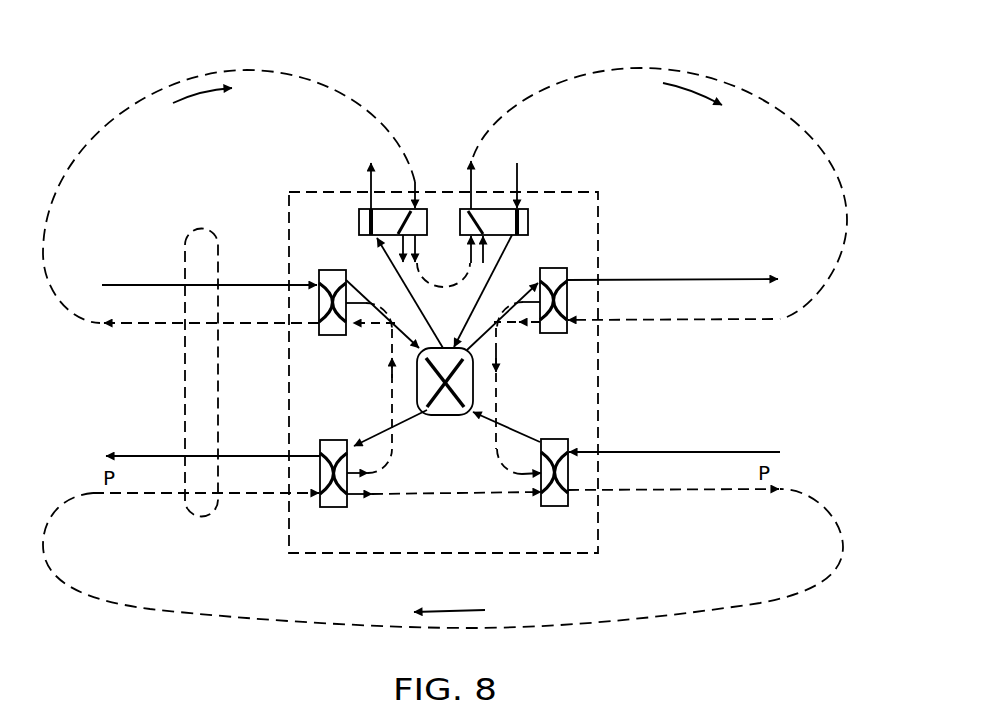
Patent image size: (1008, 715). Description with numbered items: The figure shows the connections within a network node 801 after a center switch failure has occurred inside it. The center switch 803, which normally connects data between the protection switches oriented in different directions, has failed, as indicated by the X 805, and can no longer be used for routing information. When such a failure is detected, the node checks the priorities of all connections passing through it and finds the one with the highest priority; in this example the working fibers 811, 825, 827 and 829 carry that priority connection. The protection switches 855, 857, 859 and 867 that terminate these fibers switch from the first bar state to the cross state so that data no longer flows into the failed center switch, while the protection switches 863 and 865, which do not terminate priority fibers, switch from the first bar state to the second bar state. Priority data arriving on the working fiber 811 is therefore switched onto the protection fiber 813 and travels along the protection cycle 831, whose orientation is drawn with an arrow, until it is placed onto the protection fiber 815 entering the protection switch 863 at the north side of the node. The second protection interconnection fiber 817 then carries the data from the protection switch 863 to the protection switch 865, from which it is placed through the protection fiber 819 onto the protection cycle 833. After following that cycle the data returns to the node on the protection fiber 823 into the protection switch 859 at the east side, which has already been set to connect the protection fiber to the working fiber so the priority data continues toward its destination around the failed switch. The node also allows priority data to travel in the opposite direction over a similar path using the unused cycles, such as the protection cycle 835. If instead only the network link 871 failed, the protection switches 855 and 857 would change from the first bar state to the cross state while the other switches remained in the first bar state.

The network node 801 is at (598, 542).
The center switch 803 is at (443, 417).
The X 805 is at (453, 373).
The working fiber 811 is at (282, 285).
The protection fiber 813 is at (162, 323).
The protection fiber 815 is at (416, 182).
The second protection interconnection fiber 817 is at (441, 289).
The protection fiber 819 is at (478, 163).
The protection fiber 823 is at (712, 320).
The working fiber 825 is at (607, 280).
The working fiber 827 is at (608, 452).
The working fiber 829 is at (282, 456).
The protection cycle 831 is at (180, 82).
The protection cycle 833 is at (543, 88).
The protection cycle 835 is at (700, 612).
The protection switch 855 is at (333, 269).
The protection switch 857 is at (330, 507).
The protection switch 859 is at (553, 335).
The protection switch 863 is at (371, 208).
The protection switch 865 is at (530, 217).
The protection switch 867 is at (556, 506).
The network link 871 is at (200, 518).